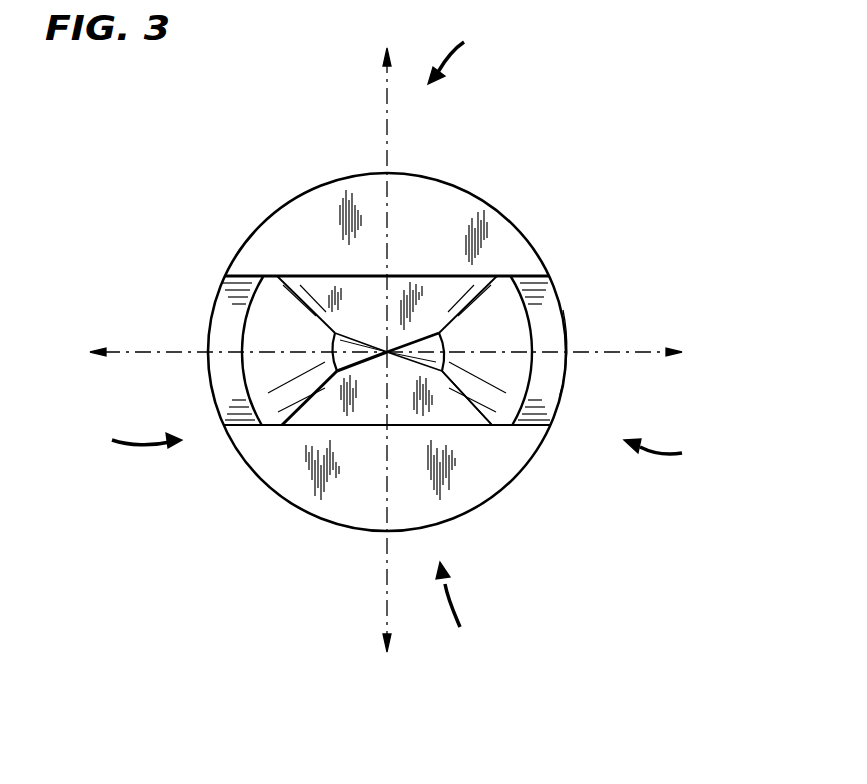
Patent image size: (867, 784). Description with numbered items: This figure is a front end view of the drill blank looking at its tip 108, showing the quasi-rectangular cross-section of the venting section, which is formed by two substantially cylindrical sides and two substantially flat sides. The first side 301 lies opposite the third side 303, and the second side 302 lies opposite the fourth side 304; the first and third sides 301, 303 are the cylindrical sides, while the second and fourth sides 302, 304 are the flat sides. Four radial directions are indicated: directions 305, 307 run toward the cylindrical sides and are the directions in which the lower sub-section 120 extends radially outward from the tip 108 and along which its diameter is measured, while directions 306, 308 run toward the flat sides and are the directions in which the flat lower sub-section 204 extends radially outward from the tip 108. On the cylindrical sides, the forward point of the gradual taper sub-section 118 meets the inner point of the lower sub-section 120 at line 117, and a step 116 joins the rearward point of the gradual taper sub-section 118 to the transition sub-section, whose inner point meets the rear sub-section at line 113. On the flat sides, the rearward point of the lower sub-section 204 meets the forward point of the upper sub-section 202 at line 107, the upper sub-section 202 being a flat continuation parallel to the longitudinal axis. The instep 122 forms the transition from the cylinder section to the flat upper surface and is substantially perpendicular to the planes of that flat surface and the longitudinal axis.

The line 107 is at (580, 336).
The tip 108 is at (386, 351).
The line 113 is at (565, 310).
The step 116 is at (503, 276).
The line 117 is at (333, 339).
The gradual taper sub-section 118 is at (508, 395).
The lower sub-section 120 is at (435, 290).
The instep 122 is at (282, 465).
The upper sub-section 202 is at (548, 273).
The lower sub-section 204 is at (328, 298).
The first side 301 is at (112, 444).
The second side 302 is at (479, 51).
The third side 303 is at (687, 458).
The fourth side 304 is at (481, 623).
The radial direction 305 is at (180, 352).
The radial direction 306 is at (387, 133).
The radial direction 307 is at (603, 352).
The radial direction 308 is at (387, 578).